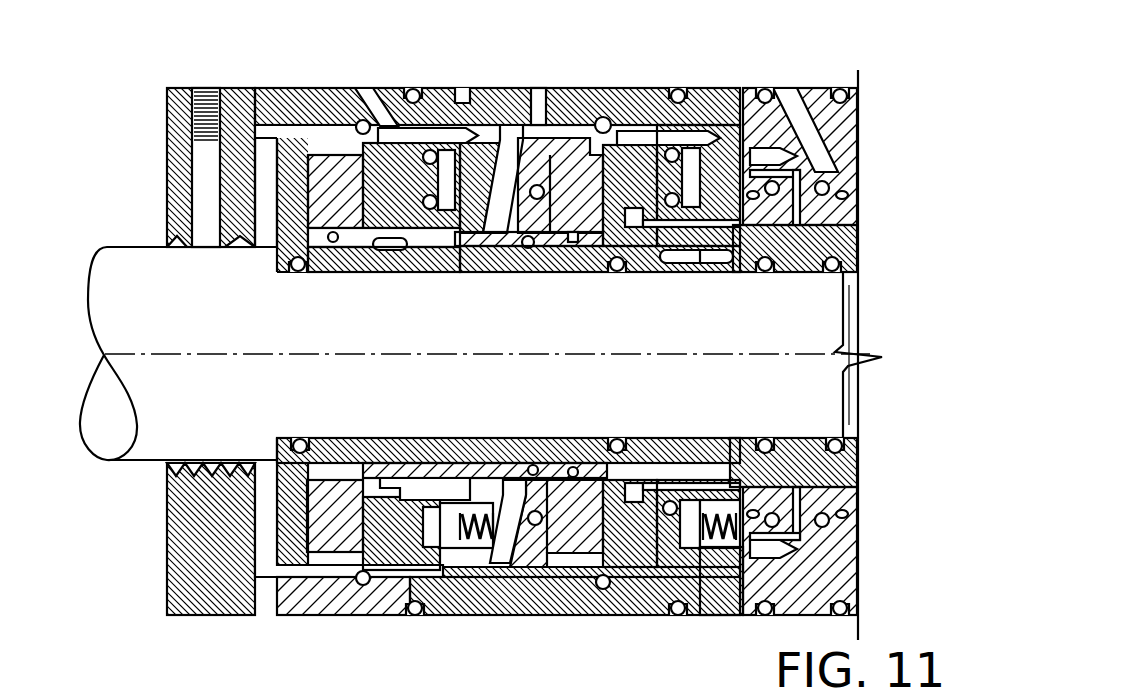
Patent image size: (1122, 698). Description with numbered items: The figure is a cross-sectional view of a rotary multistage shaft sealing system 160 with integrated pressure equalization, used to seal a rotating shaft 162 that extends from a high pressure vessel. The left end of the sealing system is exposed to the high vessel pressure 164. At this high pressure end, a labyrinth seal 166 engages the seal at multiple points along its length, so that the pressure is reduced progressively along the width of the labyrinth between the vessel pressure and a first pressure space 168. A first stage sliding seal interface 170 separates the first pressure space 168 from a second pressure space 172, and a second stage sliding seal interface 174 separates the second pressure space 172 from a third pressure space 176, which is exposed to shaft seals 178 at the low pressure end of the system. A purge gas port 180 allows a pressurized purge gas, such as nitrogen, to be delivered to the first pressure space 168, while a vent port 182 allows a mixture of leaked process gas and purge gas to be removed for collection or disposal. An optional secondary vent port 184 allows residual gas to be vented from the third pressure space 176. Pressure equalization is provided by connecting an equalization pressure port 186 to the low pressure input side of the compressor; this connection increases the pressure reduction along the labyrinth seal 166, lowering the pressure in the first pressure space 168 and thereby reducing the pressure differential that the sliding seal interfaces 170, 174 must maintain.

The rotary multistage shaft sealing system 160 is at (448, 86).
The rotating shaft 162 is at (102, 348).
The high vessel pressure 164 is at (131, 223).
The labyrinth seal 166 is at (228, 260).
The first pressure space 168 is at (266, 242).
The first stage sliding seal interface 170 is at (360, 190).
The second pressure space 172 is at (583, 132).
The second stage sliding seal interface 174 is at (597, 188).
The third pressure space 176 is at (630, 235).
The shaft seals 178 is at (788, 226).
The purge gas port 180 is at (373, 86).
The vent port 182 is at (535, 84).
The secondary vent port 184 is at (728, 88).
The equalization pressure port 186 is at (210, 90).